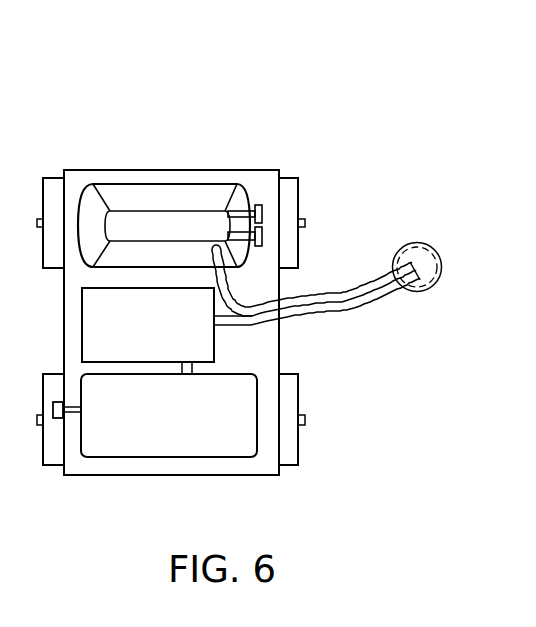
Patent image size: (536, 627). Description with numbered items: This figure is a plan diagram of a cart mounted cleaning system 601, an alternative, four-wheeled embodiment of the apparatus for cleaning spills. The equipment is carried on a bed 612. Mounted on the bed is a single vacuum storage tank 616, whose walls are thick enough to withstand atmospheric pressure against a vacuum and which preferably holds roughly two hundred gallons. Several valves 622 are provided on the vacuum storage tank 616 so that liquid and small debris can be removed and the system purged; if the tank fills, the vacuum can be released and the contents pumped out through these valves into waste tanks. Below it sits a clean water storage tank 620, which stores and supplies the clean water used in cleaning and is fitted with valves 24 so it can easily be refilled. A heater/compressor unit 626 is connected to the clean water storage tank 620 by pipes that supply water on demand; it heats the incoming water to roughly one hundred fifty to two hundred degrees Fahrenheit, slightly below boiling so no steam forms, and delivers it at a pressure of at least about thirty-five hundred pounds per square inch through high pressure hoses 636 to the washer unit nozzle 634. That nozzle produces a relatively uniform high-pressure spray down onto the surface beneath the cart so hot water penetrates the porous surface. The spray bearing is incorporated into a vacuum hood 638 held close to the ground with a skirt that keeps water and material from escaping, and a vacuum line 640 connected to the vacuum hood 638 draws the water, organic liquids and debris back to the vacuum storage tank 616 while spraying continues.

The cart mounted cleaning system 601 is at (131, 74).
The bed 612 is at (83, 170).
The vacuum storage tank 616 is at (153, 186).
The valves 622 is at (251, 184).
The heater/compressor unit 626 is at (145, 333).
The clean water storage tank 620 is at (203, 448).
The valves 24 is at (50, 383).
The vacuum line 640 is at (327, 291).
The high pressure hoses 636 is at (320, 313).
The washer unit nozzle 634 is at (432, 254).
The vacuum hood 638 is at (442, 263).